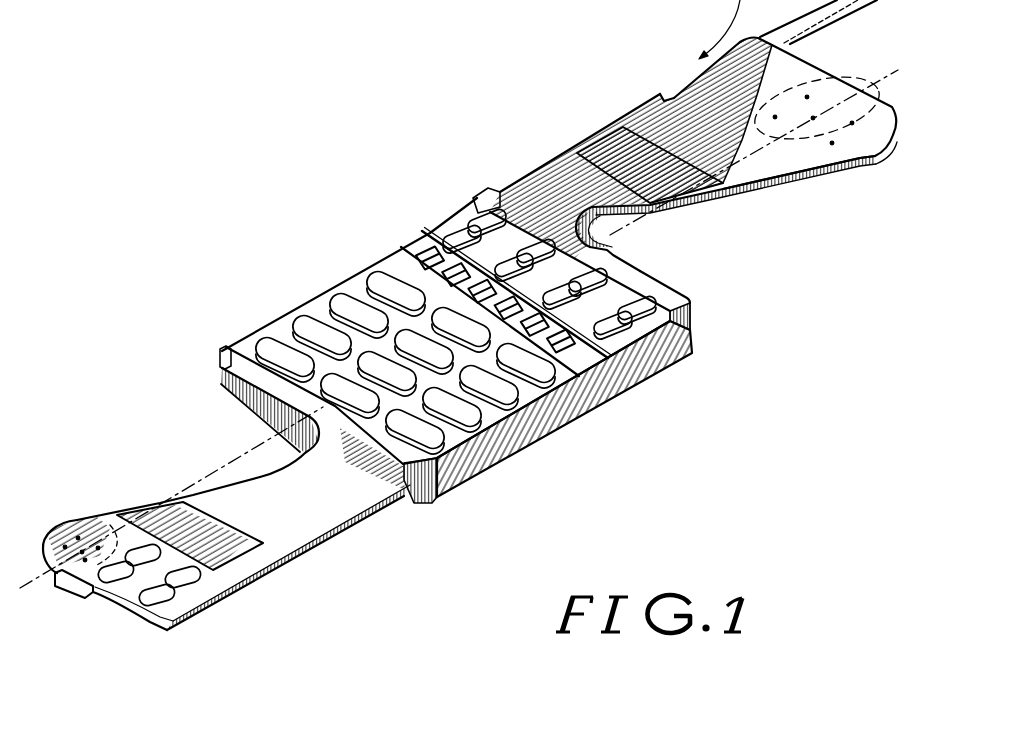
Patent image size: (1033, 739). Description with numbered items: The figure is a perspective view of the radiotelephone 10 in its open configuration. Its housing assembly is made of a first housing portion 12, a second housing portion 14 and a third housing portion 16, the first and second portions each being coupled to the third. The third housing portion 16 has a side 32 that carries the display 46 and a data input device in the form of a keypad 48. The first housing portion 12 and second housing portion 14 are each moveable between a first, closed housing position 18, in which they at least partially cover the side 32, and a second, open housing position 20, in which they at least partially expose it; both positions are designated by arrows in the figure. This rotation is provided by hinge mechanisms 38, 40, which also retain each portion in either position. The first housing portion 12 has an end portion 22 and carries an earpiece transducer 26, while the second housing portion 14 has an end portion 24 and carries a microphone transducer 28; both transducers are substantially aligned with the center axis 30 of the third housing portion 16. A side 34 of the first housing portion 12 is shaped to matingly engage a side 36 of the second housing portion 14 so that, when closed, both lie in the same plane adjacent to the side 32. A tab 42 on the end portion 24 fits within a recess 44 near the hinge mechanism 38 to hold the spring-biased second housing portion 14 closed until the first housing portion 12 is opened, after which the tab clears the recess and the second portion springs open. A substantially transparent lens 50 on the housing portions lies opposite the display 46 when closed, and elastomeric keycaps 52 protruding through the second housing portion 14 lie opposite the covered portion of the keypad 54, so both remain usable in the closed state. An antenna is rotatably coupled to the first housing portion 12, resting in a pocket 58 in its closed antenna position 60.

The radiotelephone 10 is at (640, 535).
The first housing portion 12 is at (760, 168).
The second housing portion 14 is at (295, 518).
The third housing portion 16 is at (620, 388).
The first closed housing position 18 is at (454, 332).
The second open housing position 20 is at (290, 290).
The end portion of the first housing portion 22 is at (824, 64).
The end portion of the second housing portion 24 is at (137, 620).
The earpiece transducer 26 is at (843, 135).
The microphone transducer 28 is at (96, 537).
The center axis 30 is at (882, 80).
The side of the third housing portion 32 is at (394, 260).
The side of the first housing portion 34 is at (818, 170).
The side of the second housing portion 36 is at (283, 464).
The hinge mechanism 38 is at (692, 312).
The hinge mechanism 40 is at (433, 502).
The tab 42 is at (77, 587).
The recess 44 is at (628, 265).
The display 46 is at (572, 360).
The keypad 48 is at (500, 412).
The lens 50 is at (704, 186).
The keycaps 52 is at (182, 600).
The covered portion of the keypad 54 is at (685, 358).
The pocket 58 is at (660, 93).
The first closed antenna position 60 is at (703, 34).